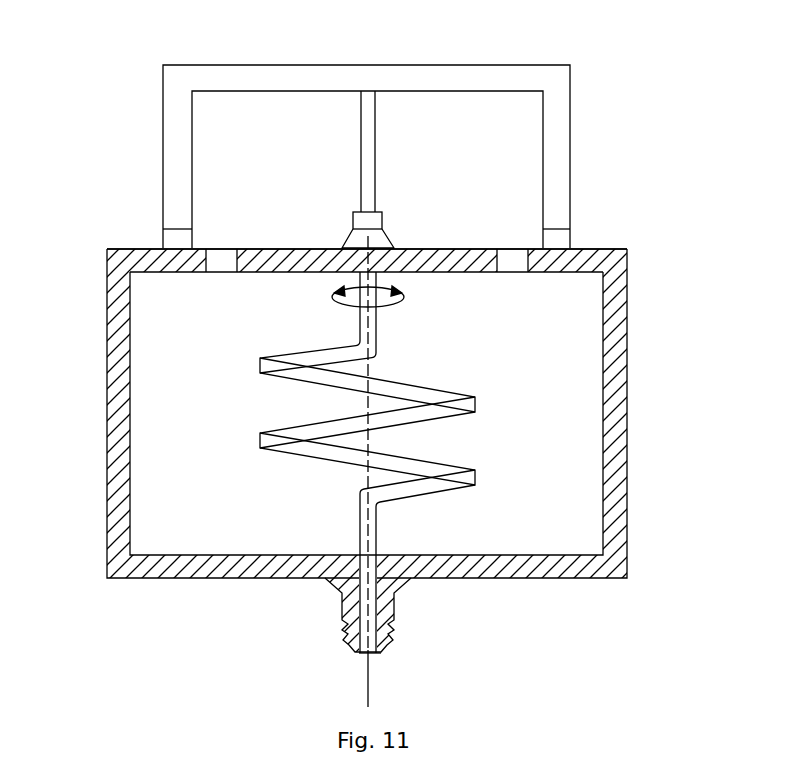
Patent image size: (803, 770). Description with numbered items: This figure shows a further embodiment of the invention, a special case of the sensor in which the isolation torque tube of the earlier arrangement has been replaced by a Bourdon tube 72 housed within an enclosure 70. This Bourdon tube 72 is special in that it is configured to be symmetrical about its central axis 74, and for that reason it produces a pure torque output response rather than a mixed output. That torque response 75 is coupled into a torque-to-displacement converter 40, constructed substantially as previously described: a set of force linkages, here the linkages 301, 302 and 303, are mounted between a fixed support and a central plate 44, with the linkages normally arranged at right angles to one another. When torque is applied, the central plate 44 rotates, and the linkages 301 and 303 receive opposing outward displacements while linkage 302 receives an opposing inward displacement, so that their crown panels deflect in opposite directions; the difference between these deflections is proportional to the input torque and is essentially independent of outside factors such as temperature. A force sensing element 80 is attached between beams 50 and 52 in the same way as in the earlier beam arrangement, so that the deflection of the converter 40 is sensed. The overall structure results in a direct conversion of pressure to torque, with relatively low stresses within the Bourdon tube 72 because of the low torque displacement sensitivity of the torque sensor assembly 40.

The torque-to-force converter 40 is at (600, 158).
The central plate 44 is at (300, 280).
The beam 50 is at (365, 78).
The beam 52 is at (370, 222).
The container 70 is at (330, 473).
The Bourdon tube 72 is at (407, 391).
The central axis 74 is at (372, 674).
The torque response 75 is at (404, 297).
The force sensing element 80 is at (362, 128).
The force linkage 301 is at (158, 240).
The force linkage 302 is at (348, 240).
The force linkage 303 is at (573, 239).